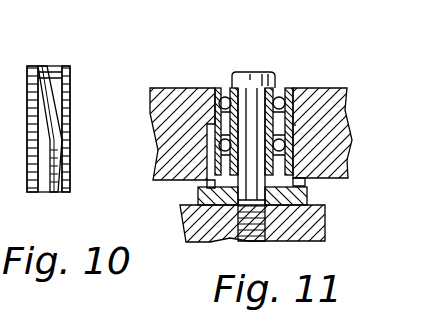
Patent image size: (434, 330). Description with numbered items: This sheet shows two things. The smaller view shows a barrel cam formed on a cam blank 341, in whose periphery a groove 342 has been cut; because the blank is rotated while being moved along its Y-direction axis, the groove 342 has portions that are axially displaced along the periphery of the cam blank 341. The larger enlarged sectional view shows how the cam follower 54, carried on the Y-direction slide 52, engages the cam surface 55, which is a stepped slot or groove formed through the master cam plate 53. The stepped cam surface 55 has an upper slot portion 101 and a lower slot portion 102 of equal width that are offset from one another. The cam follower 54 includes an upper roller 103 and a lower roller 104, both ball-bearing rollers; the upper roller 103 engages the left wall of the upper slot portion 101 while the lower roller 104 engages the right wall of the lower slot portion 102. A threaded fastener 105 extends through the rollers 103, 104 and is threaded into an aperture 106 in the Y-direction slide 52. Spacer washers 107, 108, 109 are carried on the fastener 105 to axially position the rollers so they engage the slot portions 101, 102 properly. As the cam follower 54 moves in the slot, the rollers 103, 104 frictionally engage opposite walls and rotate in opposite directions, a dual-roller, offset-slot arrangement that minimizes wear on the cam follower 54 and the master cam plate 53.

In FIG. 10, the cam blank 341 is at (62, 72).
In FIG. 10, the groove 342 is at (42, 68).
In FIG. 11, the Y-direction slide 52 is at (325, 230).
In FIG. 11, the master cam plate 53 is at (340, 110).
In FIG. 11, the cam follower 54 is at (296, 84).
In FIG. 11, the cam surface 55 is at (220, 86).
In FIG. 11, the upper slot portion 101 is at (300, 86).
In FIG. 11, the lower slot portion 102 is at (205, 182).
In FIG. 11, the upper roller 103 is at (284, 86).
In FIG. 11, the lower roller 104 is at (310, 180).
In FIG. 11, the threaded fastener 105 is at (249, 82).
In FIG. 11, the aperture 106 is at (258, 240).
In FIG. 11, the spacer washer 107 is at (296, 136).
In FIG. 11, the spacer washer 108 is at (186, 210).
In FIG. 11, the spacer washer 109 is at (310, 198).